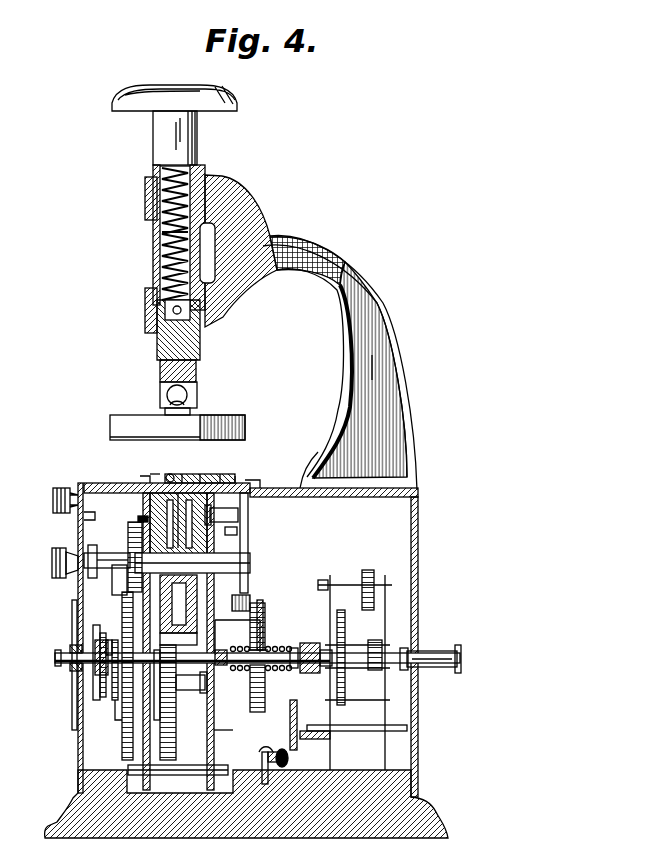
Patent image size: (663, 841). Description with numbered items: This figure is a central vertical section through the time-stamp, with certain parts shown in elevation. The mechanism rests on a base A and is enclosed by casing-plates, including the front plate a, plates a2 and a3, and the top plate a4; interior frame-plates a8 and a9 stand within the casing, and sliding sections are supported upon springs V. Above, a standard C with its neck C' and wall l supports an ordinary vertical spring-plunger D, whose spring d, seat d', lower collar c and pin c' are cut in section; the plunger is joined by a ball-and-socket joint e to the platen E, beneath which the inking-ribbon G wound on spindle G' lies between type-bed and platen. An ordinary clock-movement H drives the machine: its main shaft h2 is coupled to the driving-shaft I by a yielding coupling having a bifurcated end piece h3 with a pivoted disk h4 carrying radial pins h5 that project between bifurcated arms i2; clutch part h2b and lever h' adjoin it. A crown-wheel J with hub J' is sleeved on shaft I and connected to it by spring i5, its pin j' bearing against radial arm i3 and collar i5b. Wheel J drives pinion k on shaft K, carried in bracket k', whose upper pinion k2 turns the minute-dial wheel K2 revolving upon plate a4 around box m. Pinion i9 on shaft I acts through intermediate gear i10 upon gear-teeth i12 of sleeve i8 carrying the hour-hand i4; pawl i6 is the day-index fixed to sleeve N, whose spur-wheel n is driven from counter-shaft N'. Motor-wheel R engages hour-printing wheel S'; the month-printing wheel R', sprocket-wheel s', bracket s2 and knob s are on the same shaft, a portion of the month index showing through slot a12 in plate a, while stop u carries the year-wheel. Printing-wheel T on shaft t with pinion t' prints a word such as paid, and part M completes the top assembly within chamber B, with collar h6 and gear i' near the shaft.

The spring-plunger D is at (174, 125).
The standard C is at (163, 237).
The arm / neck of frame C' is at (308, 332).
The frame wall l is at (368, 358).
The spring d is at (154, 233).
The spring seat d' is at (149, 232).
The lower collar c is at (142, 310).
The pin c' is at (203, 341).
The ball-and-socket joint e is at (196, 392).
The platen E is at (177, 427).
The minute-dial wheel K2 is at (256, 482).
The pinion k2 is at (298, 487).
The top plate a4 is at (296, 487).
The casing-plate a3 is at (419, 566).
The front plate a is at (73, 638).
The casing-plate a2 is at (357, 509).
The housing interior B is at (302, 535).
The base A is at (246, 804).
The frame-plate a9 is at (225, 735).
The frame-plate a8 is at (178, 778).
The hour-printing wheel S' is at (192, 614).
The driving-shaft I is at (48, 666).
The motor-wheel R is at (180, 702).
The spring V is at (138, 467).
The open circular shoulder or box m is at (150, 464).
The inking-ribbon G is at (168, 470).
The counter-shaft N' is at (186, 466).
The month-printing wheel R' is at (212, 466).
The printing-wheel T is at (230, 468).
The cap piece M is at (246, 468).
The spindle G' is at (65, 492).
The slot a12 is at (76, 514).
The knob s is at (84, 559).
The sprocket-wheel s' is at (129, 557).
The bracket s2 is at (85, 517).
The stud u is at (136, 519).
The gear i' is at (119, 580).
The pinion i9 is at (123, 615).
The spur-wheel n is at (93, 630).
The sleeve i8 is at (95, 652).
The hour-hand i4 is at (70, 650).
The spring i5 is at (72, 670).
The sleeve N is at (62, 665).
The intermediate gear i10 is at (121, 670).
The calendar-index i6 is at (124, 662).
The gear-teeth i12 is at (113, 712).
The shaft K is at (251, 543).
The pinion k is at (255, 598).
The bracket k' is at (237, 626).
The shaft t is at (235, 515).
The pinion t' is at (248, 530).
The crown-wheel J is at (257, 664).
The hub J' is at (253, 678).
The collar i5b is at (235, 685).
The pin j' is at (261, 636).
The radial arm i3 is at (293, 647).
The bifurcated arm i2 is at (292, 641).
The coupling h6 is at (308, 642).
The bifurcated end piece h3 is at (324, 648).
The radially-projecting pin h5 is at (302, 672).
The disk or ring h4 is at (316, 672).
The clutch part h2b is at (332, 666).
The clock-movement H is at (353, 670).
The main shaft h2 is at (412, 653).
The lever h' is at (278, 717).